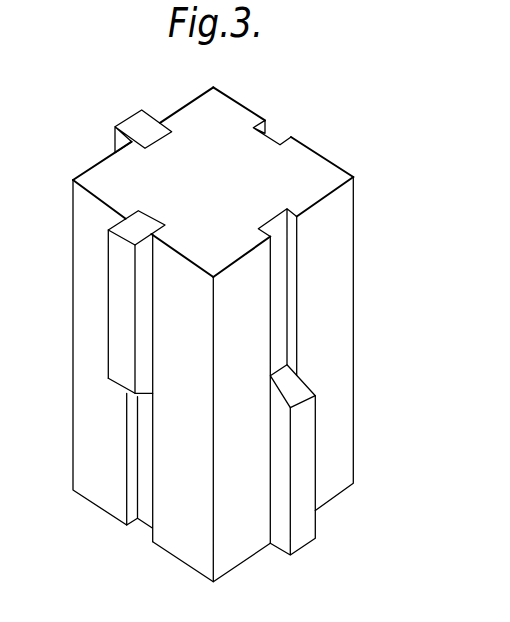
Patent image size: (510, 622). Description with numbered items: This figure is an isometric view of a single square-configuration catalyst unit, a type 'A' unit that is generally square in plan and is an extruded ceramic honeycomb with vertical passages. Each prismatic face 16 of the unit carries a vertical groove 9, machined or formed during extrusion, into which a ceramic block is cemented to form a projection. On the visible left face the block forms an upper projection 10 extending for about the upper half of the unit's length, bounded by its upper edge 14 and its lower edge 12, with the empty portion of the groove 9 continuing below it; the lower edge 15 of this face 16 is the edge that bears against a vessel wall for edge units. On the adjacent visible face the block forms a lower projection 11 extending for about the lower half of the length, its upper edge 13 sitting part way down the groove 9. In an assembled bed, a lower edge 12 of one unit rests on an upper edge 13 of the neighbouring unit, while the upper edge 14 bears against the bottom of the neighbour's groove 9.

The vertical groove 9 is at (275, 141).
The upper projection 10 is at (128, 122).
The lower projection 11 is at (300, 537).
The lower edge of upper projection 12 is at (121, 387).
The upper edge of lower projection 13 is at (302, 386).
The upper edge of upper projection 14 is at (132, 246).
The lower edge of face 15 is at (180, 560).
The face 16 is at (83, 315).